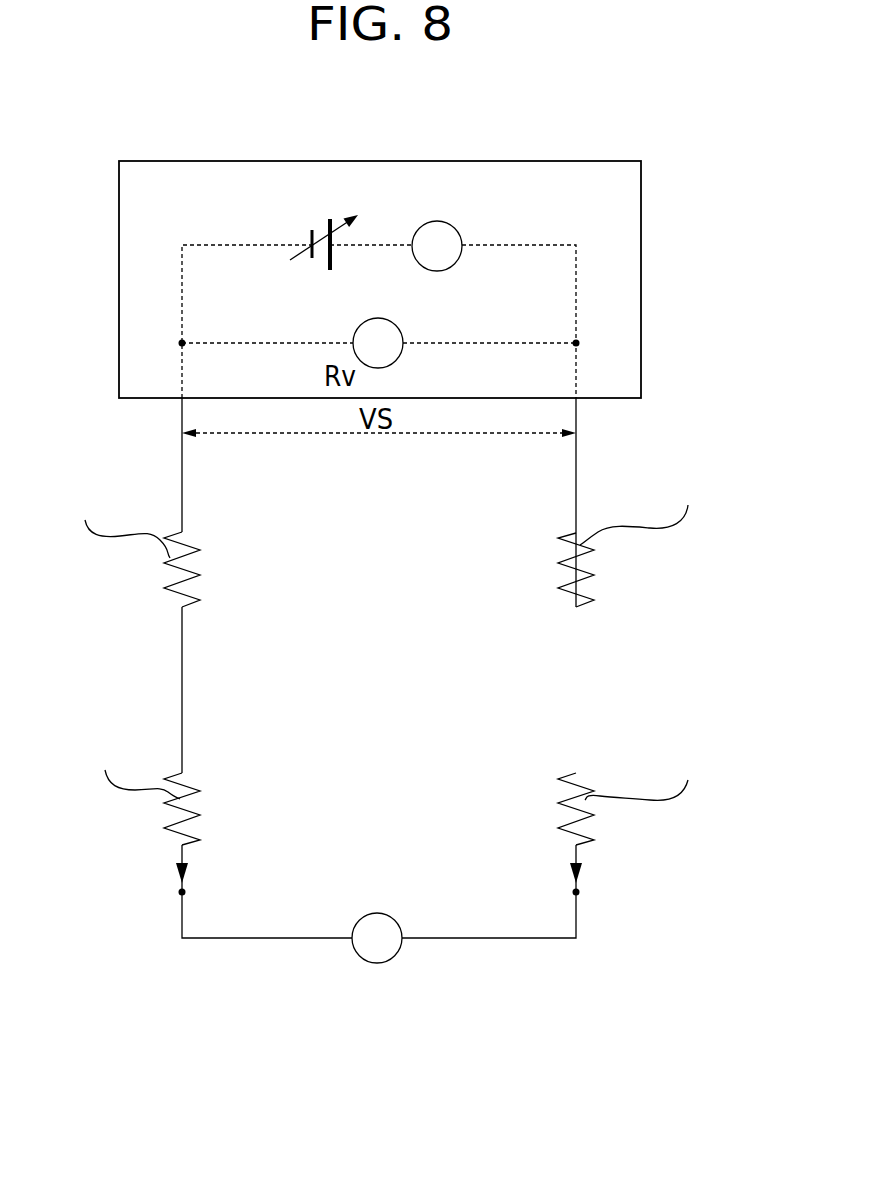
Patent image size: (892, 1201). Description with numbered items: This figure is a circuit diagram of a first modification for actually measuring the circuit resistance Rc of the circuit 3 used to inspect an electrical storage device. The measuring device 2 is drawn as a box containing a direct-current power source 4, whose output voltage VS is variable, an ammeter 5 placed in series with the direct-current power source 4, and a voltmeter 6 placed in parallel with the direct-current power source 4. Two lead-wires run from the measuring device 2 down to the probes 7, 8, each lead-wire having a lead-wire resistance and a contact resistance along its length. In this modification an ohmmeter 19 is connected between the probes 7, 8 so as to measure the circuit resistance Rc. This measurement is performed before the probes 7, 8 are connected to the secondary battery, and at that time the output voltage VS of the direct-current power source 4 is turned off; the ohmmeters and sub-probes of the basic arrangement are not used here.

The measuring device 2 is at (641, 297).
The circuit 3 is at (704, 379).
The direct-current power source 4 is at (320, 232).
The ammeter 5 is at (455, 222).
The voltmeter 6 is at (400, 323).
The probe 7 is at (583, 880).
The probe 8 is at (173, 880).
The ohmmeter 19 is at (401, 950).